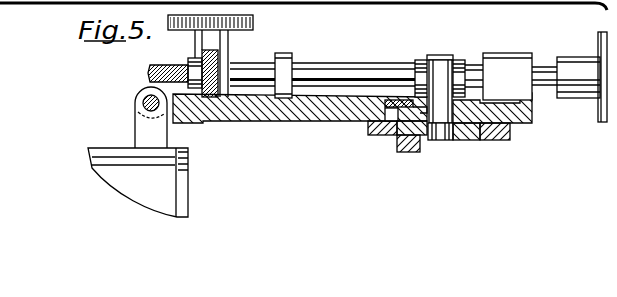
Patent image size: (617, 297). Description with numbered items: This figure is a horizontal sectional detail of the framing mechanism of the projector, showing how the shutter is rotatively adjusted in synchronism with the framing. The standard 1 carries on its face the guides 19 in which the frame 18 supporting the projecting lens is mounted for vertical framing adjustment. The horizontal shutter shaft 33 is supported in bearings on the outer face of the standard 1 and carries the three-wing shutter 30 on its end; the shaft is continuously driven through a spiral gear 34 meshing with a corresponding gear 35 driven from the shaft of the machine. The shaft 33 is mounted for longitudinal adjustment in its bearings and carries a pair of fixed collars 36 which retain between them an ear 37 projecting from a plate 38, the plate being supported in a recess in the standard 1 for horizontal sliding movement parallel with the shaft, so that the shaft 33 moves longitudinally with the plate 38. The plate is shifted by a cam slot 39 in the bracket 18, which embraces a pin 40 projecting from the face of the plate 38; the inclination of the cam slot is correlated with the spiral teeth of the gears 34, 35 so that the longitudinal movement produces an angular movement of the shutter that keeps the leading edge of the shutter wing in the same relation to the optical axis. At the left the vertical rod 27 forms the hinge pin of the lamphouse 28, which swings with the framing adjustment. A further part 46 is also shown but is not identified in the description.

The standard 1 is at (254, 122).
The frame 18 is at (403, 143).
The guides 19 is at (368, 127).
The vertical rod 27 is at (137, 100).
The lamphouse 28 is at (105, 157).
The shutter 30 is at (600, 40).
The shutter shaft 33 is at (322, 66).
The spiral gear 34 is at (196, 42).
The gear 35 is at (148, 72).
The collars 36 is at (423, 61).
The ear 37 is at (440, 55).
The plate 38 is at (398, 110).
The cam slot 39 is at (470, 138).
The pin 40 is at (442, 130).
The knurled thumb wheel 46 is at (255, 18).